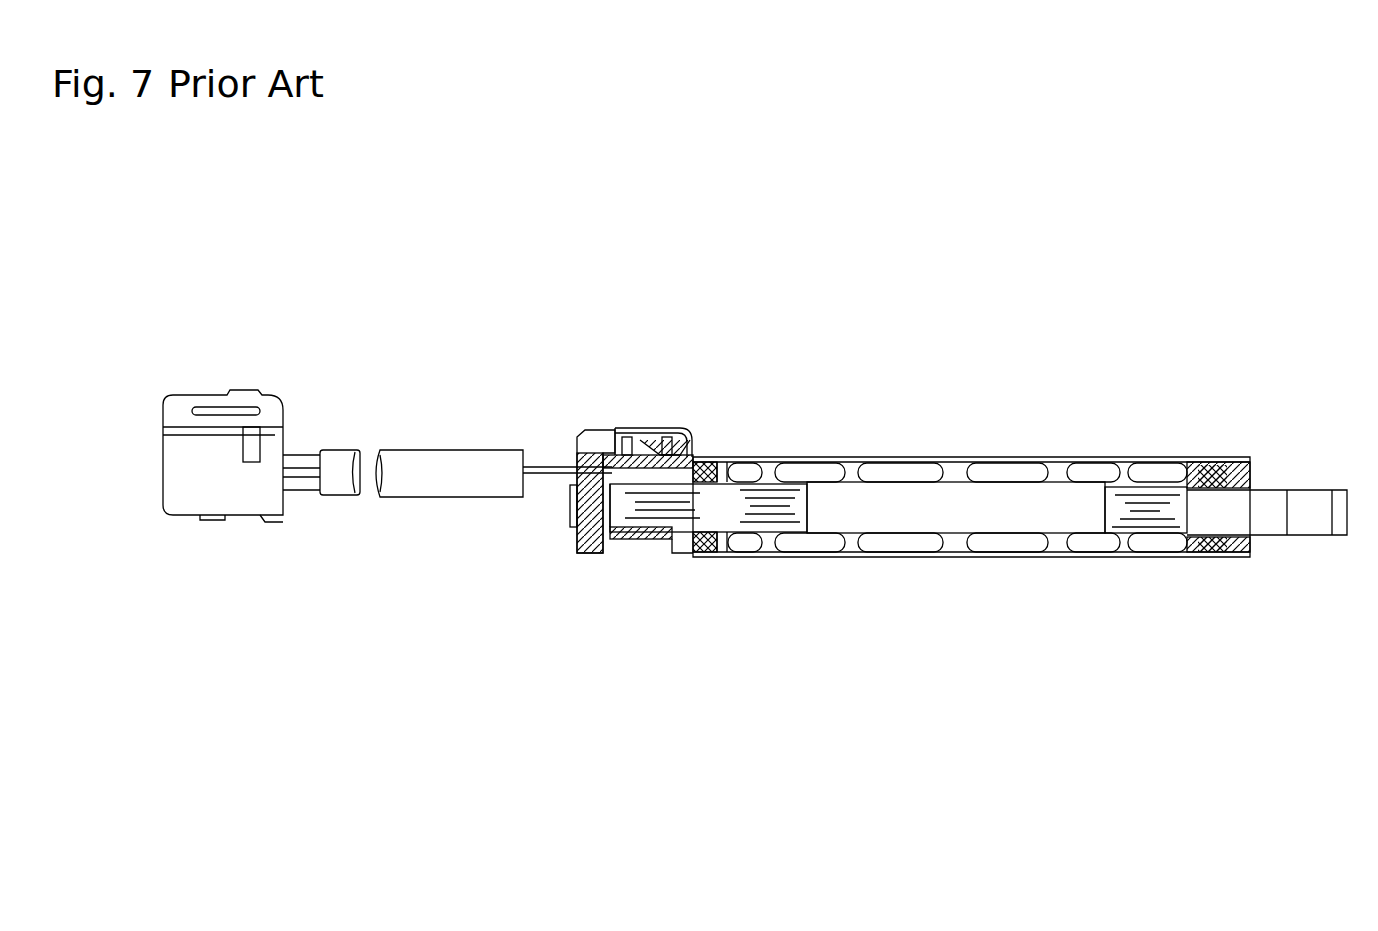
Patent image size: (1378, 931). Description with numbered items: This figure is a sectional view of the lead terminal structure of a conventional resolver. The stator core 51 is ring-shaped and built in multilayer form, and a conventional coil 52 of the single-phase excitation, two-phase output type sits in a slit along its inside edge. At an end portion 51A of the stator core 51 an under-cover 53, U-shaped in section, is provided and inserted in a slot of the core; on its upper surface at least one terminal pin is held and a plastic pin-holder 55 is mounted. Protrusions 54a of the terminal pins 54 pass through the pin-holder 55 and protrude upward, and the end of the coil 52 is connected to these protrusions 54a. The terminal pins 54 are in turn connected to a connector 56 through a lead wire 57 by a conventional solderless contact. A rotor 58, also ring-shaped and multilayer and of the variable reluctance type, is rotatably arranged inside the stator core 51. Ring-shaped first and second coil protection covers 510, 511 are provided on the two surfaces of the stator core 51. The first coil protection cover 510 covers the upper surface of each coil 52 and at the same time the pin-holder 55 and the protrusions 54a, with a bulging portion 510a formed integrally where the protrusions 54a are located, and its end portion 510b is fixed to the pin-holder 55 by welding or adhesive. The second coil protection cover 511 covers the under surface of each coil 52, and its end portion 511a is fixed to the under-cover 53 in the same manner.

The stator core 51 is at (1265, 525).
The end portion 51A is at (577, 533).
The coil 52 is at (703, 545).
The under-cover 53 is at (587, 553).
The terminal pins 54 is at (655, 470).
The protrusions 54a is at (664, 437).
The pin-holder 55 is at (628, 432).
The connector 56 is at (275, 437).
The lead wire 57 is at (537, 468).
The rotor 58 is at (1134, 525).
The first coil protection cover 510 is at (1007, 457).
The bulging portion 510a is at (687, 428).
The end portion 510b is at (588, 427).
The second coil protection cover 511 is at (948, 560).
The end portion 511a is at (675, 550).